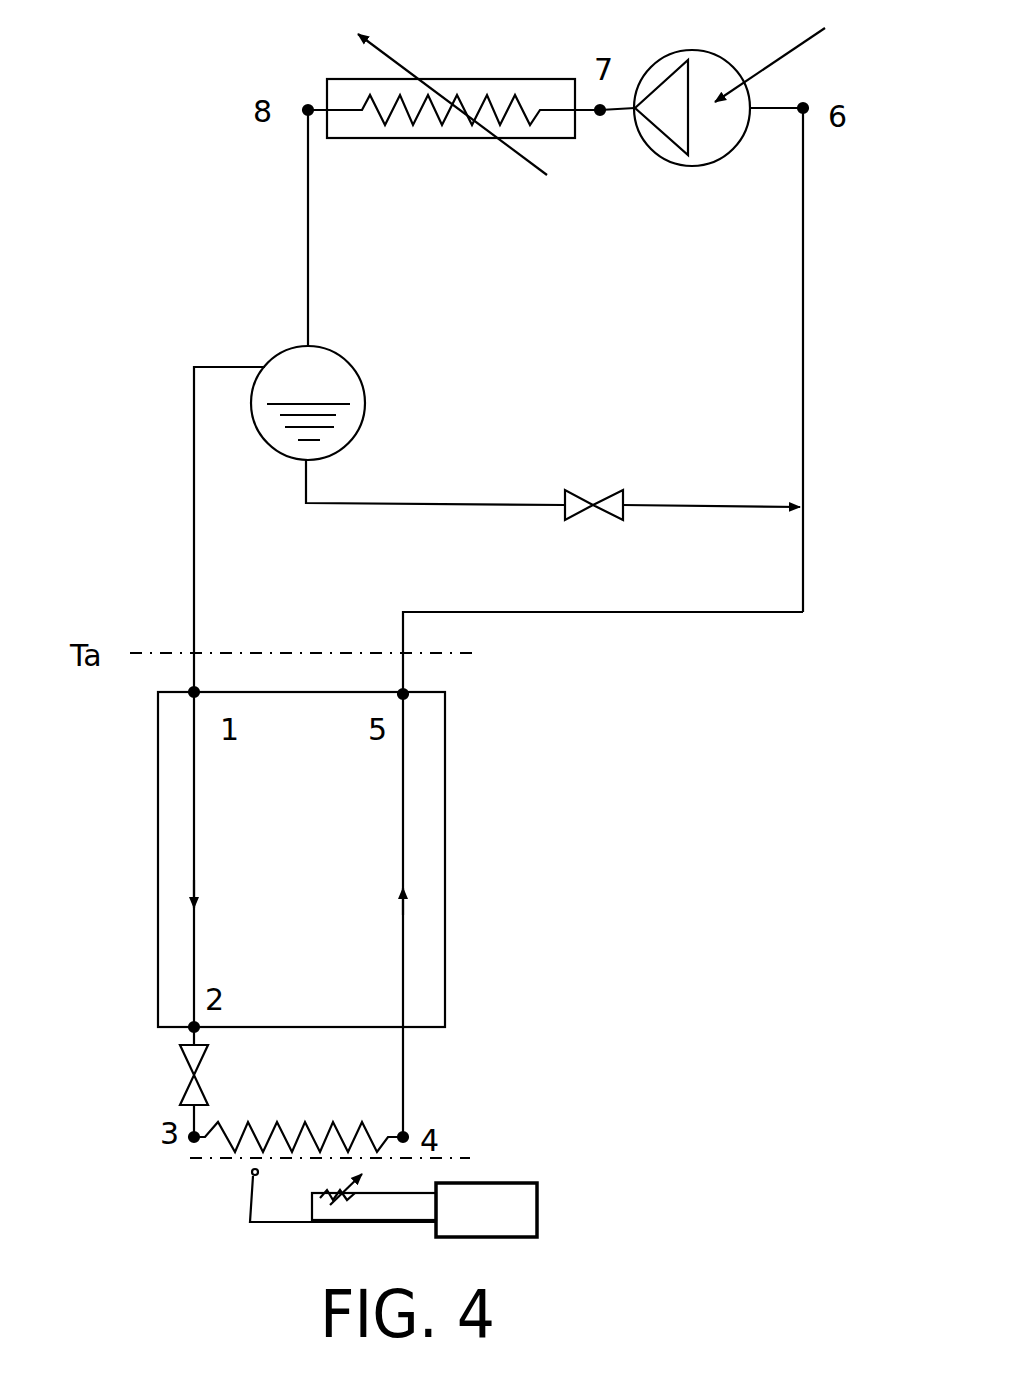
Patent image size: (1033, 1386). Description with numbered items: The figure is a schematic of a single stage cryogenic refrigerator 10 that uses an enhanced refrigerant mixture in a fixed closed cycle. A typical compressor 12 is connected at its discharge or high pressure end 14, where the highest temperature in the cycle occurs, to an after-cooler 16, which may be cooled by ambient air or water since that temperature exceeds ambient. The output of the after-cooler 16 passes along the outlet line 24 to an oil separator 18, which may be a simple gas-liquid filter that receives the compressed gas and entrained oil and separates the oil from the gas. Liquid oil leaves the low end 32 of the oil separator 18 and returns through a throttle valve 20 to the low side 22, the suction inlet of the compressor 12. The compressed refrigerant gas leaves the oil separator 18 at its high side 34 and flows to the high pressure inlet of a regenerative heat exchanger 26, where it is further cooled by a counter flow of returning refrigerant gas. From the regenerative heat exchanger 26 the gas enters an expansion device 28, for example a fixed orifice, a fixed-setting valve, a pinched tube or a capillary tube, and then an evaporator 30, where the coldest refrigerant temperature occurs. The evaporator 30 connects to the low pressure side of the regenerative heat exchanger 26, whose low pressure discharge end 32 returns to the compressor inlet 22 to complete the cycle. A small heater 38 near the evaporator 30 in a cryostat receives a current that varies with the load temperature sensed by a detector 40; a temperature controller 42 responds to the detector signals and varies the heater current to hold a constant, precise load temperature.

The refrigerator 10 is at (172, 262).
The compressor 12 is at (670, 163).
The discharge or high pressure end 14 is at (615, 106).
The after-cooler 16 is at (457, 79).
The oil separator 18 is at (342, 356).
The throttle valve 20 is at (598, 505).
The low side 22 is at (777, 105).
The outlet 24 is at (308, 230).
The regenerative heat exchanger 26 is at (154, 808).
The expansion device 28 is at (214, 1066).
The evaporator 30 is at (330, 1130).
The low pressure discharge end 32 is at (600, 612).
The high side 34 is at (222, 366).
The heater 38 is at (388, 1245).
The detector 40 is at (250, 1173).
The temperature controller 42 is at (523, 1212).